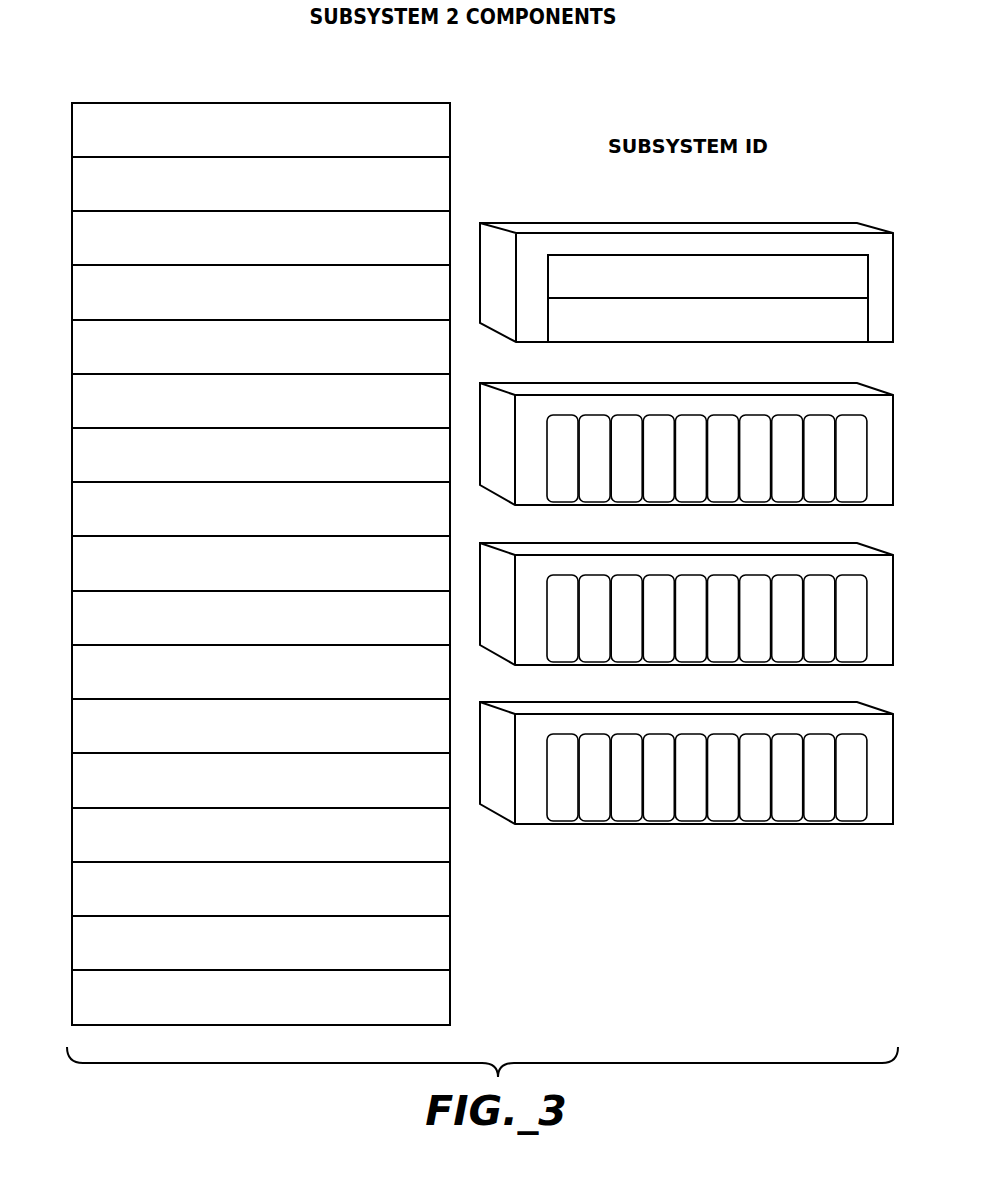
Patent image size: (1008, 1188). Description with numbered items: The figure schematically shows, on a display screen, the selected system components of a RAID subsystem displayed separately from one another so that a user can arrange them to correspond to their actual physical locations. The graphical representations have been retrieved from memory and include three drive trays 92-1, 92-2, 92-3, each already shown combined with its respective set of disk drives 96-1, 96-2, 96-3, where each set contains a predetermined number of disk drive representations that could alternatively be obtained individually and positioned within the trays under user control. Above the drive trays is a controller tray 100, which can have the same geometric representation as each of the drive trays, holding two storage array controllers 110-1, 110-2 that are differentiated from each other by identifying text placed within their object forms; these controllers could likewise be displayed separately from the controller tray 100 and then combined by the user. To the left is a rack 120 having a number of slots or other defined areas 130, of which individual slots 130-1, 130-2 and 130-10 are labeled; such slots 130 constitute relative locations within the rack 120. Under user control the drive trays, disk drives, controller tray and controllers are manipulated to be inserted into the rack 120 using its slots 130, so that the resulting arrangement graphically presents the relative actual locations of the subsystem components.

The rack 120 is at (309, 543).
The slots 130 is at (305, 357).
The slot 130-1 is at (299, 184).
The slot 130-2 is at (303, 230).
The slot 130-10 is at (309, 672).
The controller tray 100 is at (686, 285).
The storage array controller 110-1 is at (708, 247).
The storage array controller 110-2 is at (708, 336).
The drive tray 92-1 is at (686, 450).
The drive tray 92-2 is at (686, 609).
The drive tray 92-3 is at (686, 768).
The set of disk drives 96-1 is at (707, 477).
The set of disk drives 96-2 is at (707, 636).
The set of disk drives 96-3 is at (707, 795).